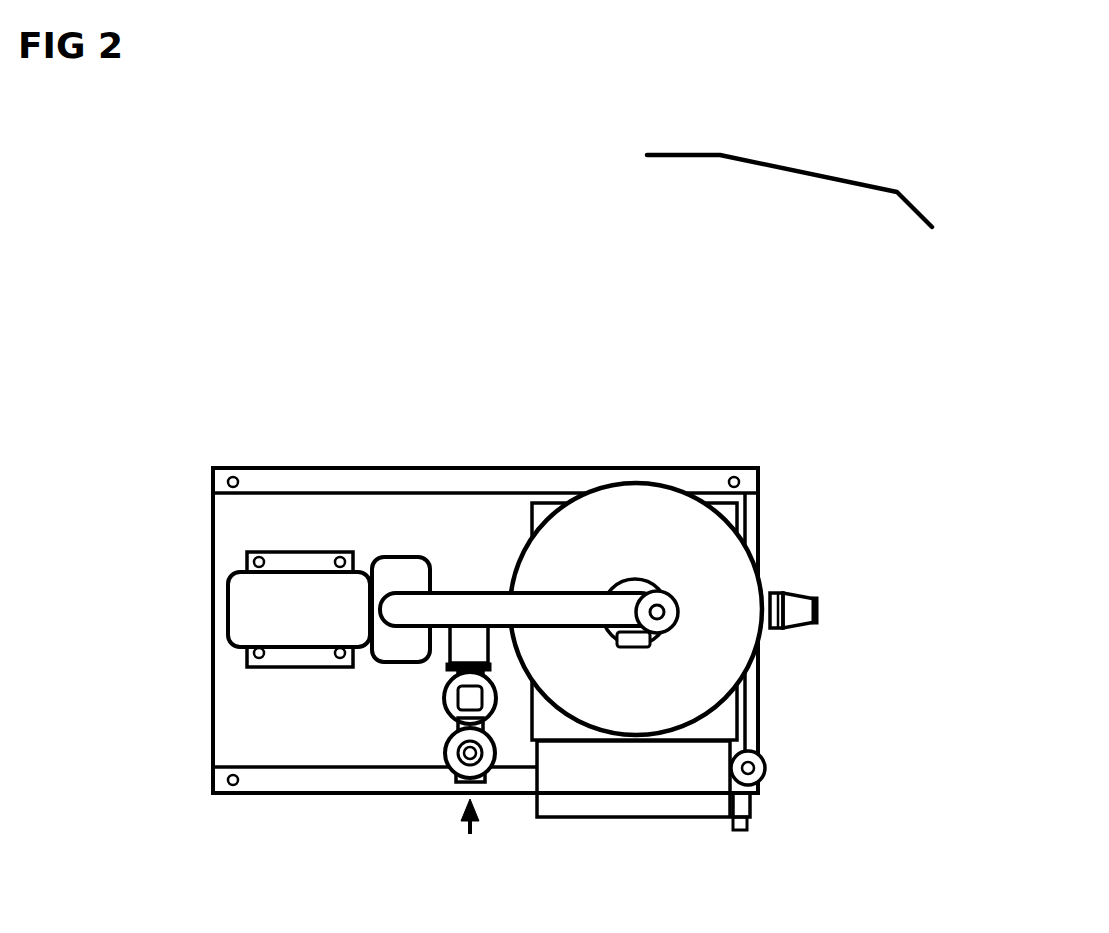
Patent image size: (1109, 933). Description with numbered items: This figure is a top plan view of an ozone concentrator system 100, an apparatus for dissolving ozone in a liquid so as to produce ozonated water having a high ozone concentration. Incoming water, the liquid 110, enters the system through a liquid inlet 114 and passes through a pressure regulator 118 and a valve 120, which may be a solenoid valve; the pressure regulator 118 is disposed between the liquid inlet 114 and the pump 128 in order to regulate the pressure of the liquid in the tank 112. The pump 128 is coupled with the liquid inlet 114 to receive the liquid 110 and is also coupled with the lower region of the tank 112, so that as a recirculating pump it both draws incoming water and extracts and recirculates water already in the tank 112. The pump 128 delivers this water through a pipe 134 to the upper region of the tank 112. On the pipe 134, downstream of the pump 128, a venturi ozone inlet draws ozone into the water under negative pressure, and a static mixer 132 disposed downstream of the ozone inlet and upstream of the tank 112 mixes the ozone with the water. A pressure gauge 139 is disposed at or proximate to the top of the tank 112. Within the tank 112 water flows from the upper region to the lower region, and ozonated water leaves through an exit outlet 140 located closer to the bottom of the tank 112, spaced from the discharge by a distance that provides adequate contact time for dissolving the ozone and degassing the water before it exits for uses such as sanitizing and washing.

The ozone concentrator system 100 is at (789, 191).
The liquid 110 is at (442, 835).
The tank 112 is at (679, 650).
The liquid inlet 114 is at (411, 791).
The pressure regulator 118 is at (505, 619).
The valve 120 is at (396, 740).
The pump 128 is at (299, 530).
The static mixer 132 is at (518, 528).
The pipe 134 is at (438, 535).
The pressure gauge 139 is at (729, 672).
The exit outlet 140 is at (819, 626).